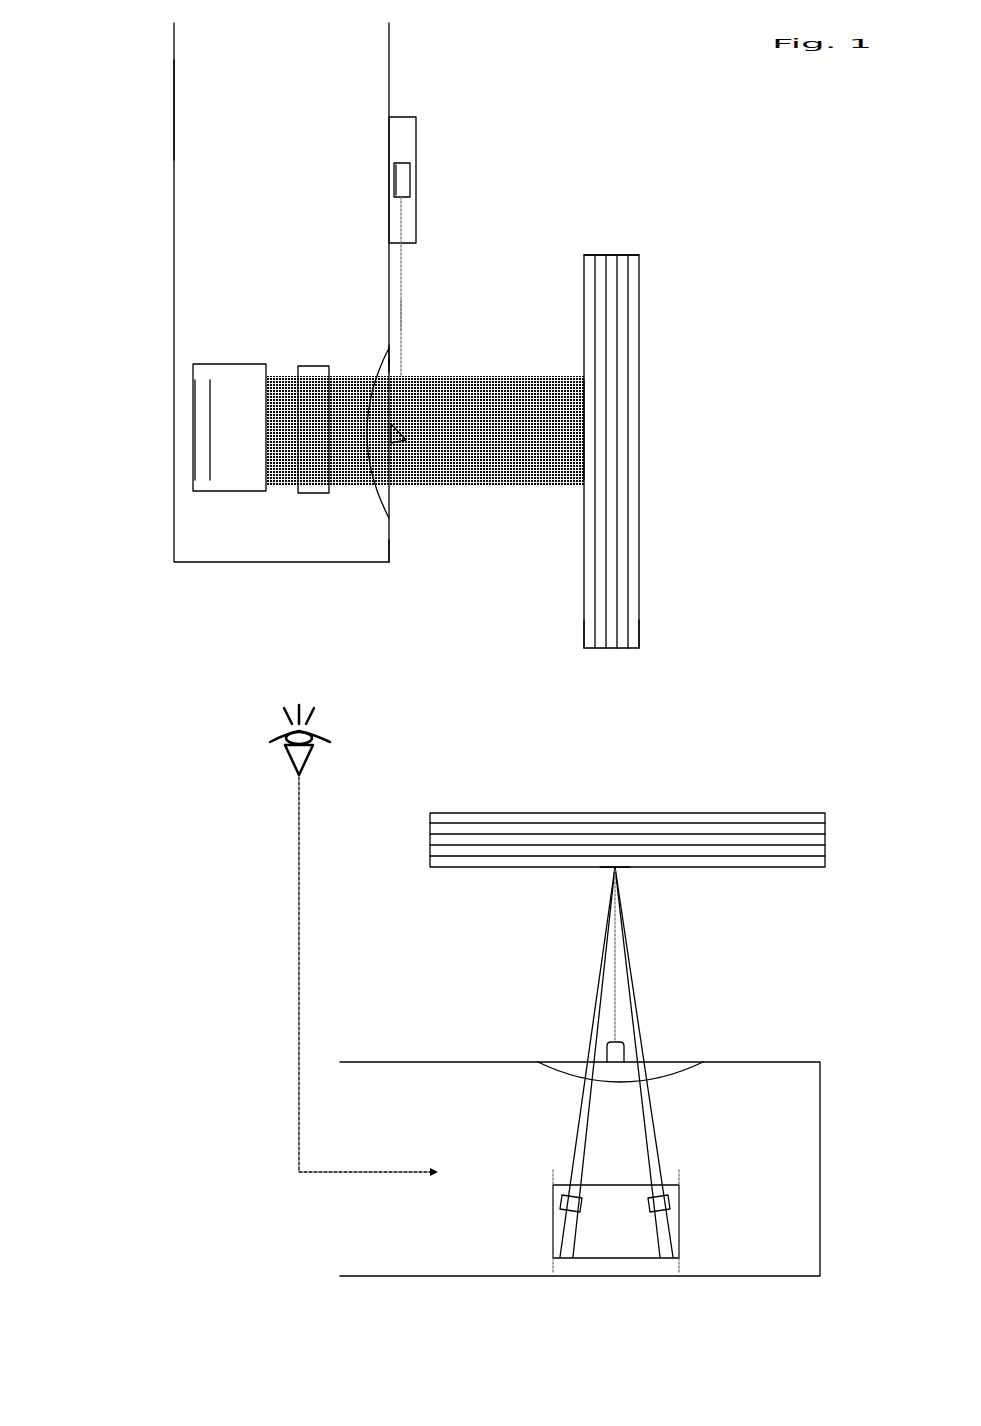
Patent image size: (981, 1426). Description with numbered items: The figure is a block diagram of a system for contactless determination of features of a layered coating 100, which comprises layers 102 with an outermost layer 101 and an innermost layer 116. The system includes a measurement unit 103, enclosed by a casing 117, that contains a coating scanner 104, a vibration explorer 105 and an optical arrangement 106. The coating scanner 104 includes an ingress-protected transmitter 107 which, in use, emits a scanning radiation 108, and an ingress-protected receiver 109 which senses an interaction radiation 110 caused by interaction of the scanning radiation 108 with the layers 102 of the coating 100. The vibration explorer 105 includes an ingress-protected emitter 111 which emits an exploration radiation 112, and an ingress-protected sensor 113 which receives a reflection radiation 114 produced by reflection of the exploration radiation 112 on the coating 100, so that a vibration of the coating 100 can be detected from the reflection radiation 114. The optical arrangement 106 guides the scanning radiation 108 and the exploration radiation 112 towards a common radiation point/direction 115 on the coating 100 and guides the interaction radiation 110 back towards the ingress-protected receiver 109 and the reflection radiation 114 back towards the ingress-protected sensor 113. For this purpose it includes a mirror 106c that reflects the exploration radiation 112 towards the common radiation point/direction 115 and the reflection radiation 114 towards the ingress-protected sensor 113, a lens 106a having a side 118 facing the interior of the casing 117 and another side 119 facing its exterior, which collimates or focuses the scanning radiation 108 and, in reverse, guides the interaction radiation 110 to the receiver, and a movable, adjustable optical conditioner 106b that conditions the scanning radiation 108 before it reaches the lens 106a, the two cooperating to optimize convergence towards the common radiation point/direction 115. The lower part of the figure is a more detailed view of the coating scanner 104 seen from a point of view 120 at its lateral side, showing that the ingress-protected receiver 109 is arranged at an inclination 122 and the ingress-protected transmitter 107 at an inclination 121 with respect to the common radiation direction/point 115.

The coating 100 is at (655, 275).
The outermost layer 101 is at (592, 650).
The layers 102 is at (617, 255).
The measurement unit 103 is at (284, 60).
The coating scanner 104 is at (226, 372).
The vibration explorer 105 is at (416, 110).
The optical arrangement 106 is at (398, 551).
The lens 106a is at (378, 497).
The optical conditioner 106b is at (318, 494).
The mirror 106c is at (395, 447).
The ingress-protected transmitter 107 is at (212, 447).
The scanning radiation 108 is at (472, 488).
The ingress-protected receiver 109 is at (212, 427).
The interaction radiation 110 is at (545, 1025).
The ingress-protected emitter 111 is at (402, 172).
The exploration radiation 112 is at (401, 313).
The ingress-protected sensor 113 is at (405, 185).
The reflection radiation 114 is at (437, 313).
The common radiation point/direction 115 is at (584, 430).
The innermost layer 116 is at (633, 650).
The casing 117 is at (174, 108).
The lens side facing casing interior 118 is at (389, 356).
The lens side facing casing exterior 119 is at (392, 365).
The point of view 120 is at (339, 940).
The inclination of transmitter 121 is at (674, 1193).
The inclination of receiver 122 is at (557, 1193).